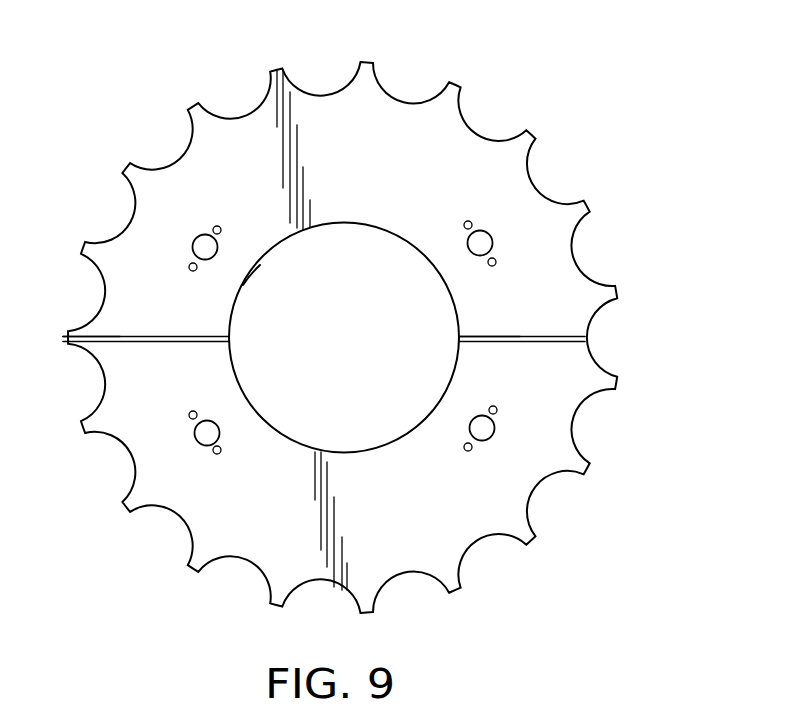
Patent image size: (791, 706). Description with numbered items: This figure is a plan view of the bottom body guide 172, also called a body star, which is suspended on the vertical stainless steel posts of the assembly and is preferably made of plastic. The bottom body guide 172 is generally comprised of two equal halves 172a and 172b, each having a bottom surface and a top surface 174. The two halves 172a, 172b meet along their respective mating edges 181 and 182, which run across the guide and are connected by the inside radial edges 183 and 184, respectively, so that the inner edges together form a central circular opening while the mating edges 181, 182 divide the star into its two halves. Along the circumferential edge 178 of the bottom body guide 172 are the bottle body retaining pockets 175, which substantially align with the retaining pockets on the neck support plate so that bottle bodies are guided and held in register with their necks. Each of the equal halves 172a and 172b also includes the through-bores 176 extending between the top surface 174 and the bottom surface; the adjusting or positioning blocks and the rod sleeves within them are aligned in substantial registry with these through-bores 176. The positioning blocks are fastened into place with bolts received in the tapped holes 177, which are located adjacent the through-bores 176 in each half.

The bottom body guide 172 is at (188, 170).
The first half of bottom body guide 172a is at (287, 518).
The second half of bottom body guide 172b is at (411, 156).
The top surface 174 is at (470, 153).
The bottle body retaining pockets 175 is at (530, 178).
The through-bores 176 is at (468, 242).
The tapped holes 177 is at (472, 447).
The circumferential edge 178 is at (277, 70).
The mating edge 181 is at (115, 339).
The mating edge 182 is at (140, 341).
The inside radial edge 183 is at (450, 387).
The inside radial edge 184 is at (243, 285).